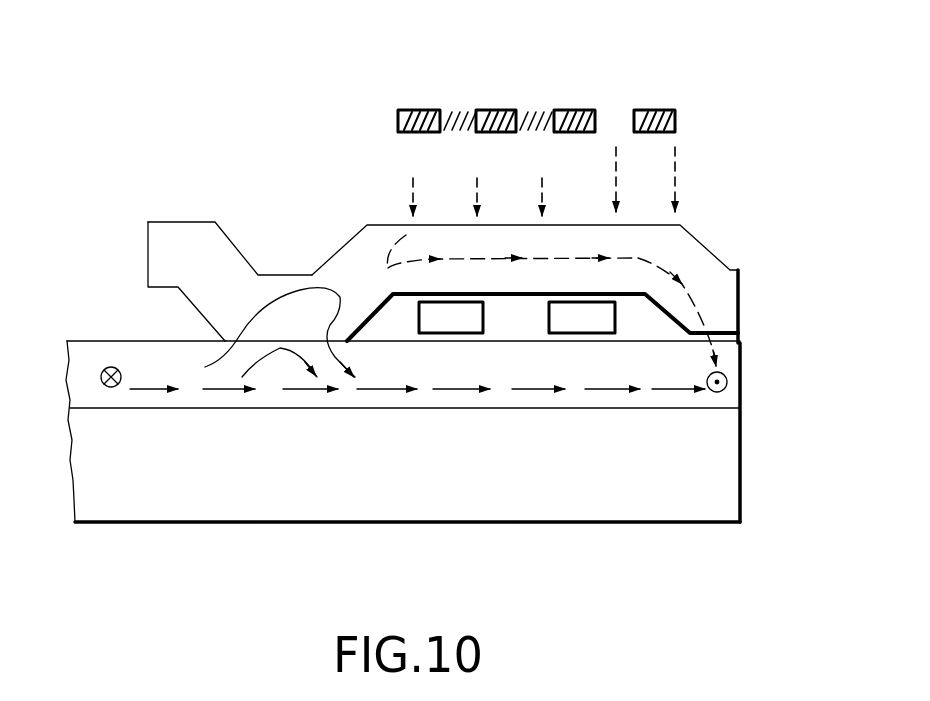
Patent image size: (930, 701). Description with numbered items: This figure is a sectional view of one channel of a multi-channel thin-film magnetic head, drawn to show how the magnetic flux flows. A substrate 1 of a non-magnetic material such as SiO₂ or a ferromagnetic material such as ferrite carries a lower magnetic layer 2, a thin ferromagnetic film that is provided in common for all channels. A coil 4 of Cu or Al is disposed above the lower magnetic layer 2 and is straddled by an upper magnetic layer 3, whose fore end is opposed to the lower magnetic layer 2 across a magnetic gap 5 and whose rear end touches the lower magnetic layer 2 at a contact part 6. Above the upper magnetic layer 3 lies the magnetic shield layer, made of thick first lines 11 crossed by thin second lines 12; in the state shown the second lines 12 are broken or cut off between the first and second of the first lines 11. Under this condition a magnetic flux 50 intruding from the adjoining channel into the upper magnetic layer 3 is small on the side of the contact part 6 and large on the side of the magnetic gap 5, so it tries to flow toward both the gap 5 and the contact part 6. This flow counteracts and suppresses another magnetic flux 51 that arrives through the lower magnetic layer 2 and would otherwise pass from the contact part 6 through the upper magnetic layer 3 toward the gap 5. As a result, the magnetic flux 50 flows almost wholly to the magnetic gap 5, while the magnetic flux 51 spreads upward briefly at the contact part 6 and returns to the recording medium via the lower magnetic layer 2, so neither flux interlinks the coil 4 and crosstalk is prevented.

The substrate 1 is at (728, 481).
The lower magnetic layer 2 is at (728, 397).
The upper magnetic layer 3 is at (728, 299).
The coil 4 is at (588, 322).
The magnetic gap 5 is at (730, 337).
The contact part 6 is at (237, 341).
The first lines 11 is at (398, 120).
The second lines 12 is at (525, 110).
The magnetic flux 50 is at (542, 185).
The magnetic flux 51 is at (300, 389).